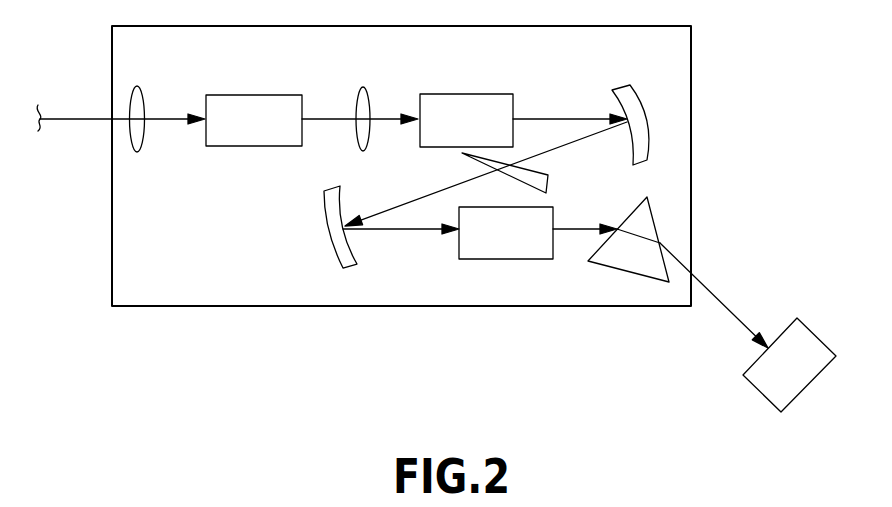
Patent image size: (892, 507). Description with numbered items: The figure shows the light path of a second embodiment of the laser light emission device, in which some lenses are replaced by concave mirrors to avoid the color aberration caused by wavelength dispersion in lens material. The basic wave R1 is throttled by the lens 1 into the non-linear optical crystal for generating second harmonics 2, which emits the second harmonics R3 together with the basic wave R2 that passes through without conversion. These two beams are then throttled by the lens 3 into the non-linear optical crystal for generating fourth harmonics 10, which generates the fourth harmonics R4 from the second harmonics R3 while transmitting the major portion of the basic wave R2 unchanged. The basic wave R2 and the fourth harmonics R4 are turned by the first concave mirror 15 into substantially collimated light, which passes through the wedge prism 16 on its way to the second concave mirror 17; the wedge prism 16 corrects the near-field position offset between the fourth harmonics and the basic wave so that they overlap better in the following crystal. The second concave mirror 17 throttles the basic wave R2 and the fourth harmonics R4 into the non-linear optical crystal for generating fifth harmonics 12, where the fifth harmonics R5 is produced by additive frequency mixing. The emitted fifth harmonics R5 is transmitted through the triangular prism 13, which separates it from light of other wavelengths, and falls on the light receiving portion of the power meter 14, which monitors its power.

The lens 1 is at (138, 152).
The non-linear optical crystal for generating second harmonics 2 is at (225, 146).
The lens 3 is at (366, 150).
The non-linear optical crystal for generating fourth harmonics 10 is at (448, 147).
The non-linear optical crystal for generating fifth harmonics 12 is at (492, 250).
The triangular prism 13 is at (608, 262).
The power meter 14 is at (810, 330).
The first concave mirror 15 is at (630, 100).
The wedge prism 16 is at (543, 173).
The second concave mirror 17 is at (333, 248).
The basic wave R1 is at (53, 117).
The basic wave R2 is at (317, 117).
The second harmonics R3 is at (323, 123).
The fourth harmonics R4 is at (579, 117).
The fifth harmonics R5 is at (718, 293).